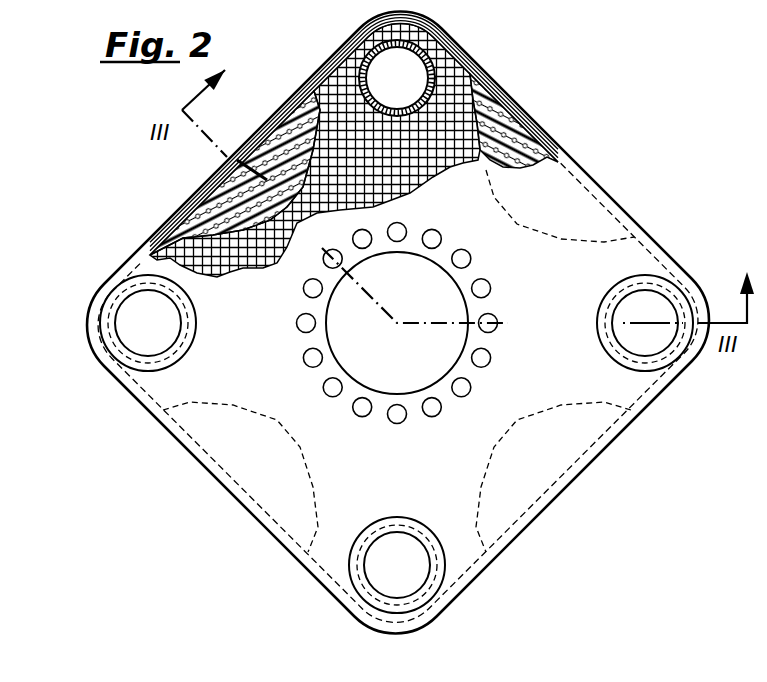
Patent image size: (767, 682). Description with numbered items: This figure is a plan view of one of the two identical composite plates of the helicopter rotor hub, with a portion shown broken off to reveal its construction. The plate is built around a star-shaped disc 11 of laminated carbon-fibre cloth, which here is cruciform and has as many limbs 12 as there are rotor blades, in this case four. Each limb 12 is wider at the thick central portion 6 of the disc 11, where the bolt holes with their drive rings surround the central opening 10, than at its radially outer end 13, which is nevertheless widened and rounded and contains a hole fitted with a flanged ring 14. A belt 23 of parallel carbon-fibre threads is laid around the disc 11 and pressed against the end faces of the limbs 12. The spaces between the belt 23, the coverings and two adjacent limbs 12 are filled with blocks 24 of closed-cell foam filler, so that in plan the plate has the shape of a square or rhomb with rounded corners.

The central portion 6 is at (487, 412).
The central opening 10 is at (397, 323).
The star-shaped disc 11 is at (524, 213).
The limbs 12 is at (424, 142).
The radially outer end 13 is at (437, 35).
The flanged ring 14 is at (425, 97).
The belt of parallel carbon-fibre threads 23 is at (173, 220).
The blocks of filler material 24 is at (267, 160).